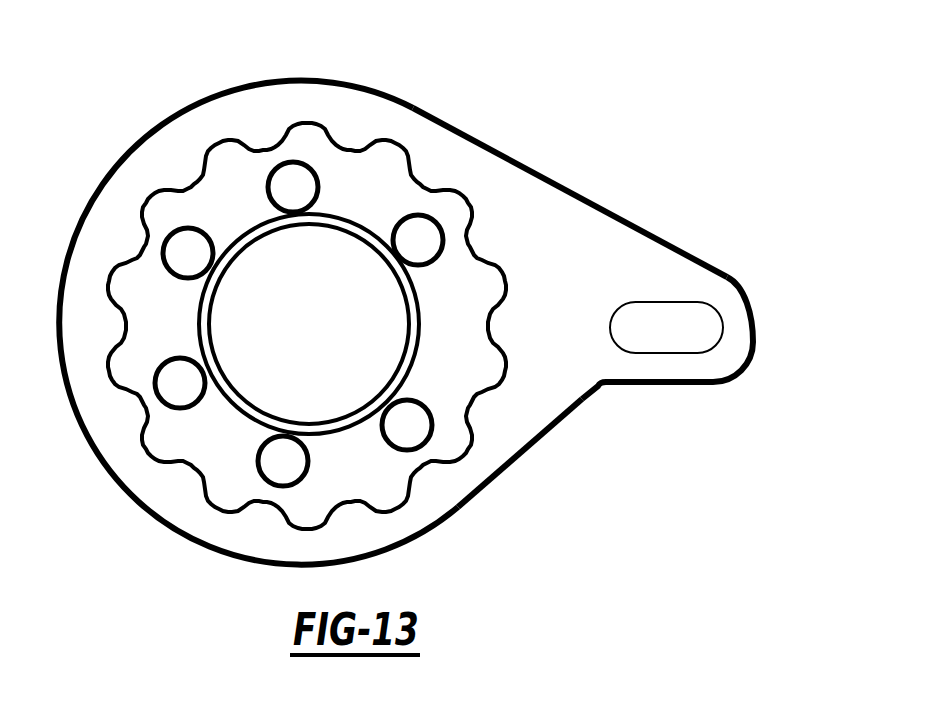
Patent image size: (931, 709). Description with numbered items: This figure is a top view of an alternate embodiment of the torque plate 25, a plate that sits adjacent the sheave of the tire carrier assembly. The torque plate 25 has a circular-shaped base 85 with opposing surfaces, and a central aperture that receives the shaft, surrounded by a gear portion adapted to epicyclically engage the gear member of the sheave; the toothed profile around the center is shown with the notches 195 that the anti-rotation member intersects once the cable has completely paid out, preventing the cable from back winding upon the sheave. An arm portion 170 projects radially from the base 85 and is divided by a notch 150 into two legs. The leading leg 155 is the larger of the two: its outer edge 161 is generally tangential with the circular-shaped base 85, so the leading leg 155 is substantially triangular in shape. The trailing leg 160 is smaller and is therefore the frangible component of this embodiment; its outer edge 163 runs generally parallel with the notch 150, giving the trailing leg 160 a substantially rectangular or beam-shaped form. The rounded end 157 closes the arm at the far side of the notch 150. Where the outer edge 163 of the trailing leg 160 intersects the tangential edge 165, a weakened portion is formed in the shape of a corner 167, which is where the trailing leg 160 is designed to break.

The torque plate 25 is at (353, 113).
The base 85 is at (83, 440).
The notches 195 is at (253, 157).
The arm portion 170 is at (538, 228).
The leading leg 155 is at (600, 273).
The notch 150 is at (660, 333).
The outer edge 161 is at (684, 250).
The rounded end 157 is at (735, 328).
The outer edge 163 is at (693, 384).
The trailing leg 160 is at (661, 370).
The corner 167 is at (601, 385).
The tangential edge 165 is at (540, 440).